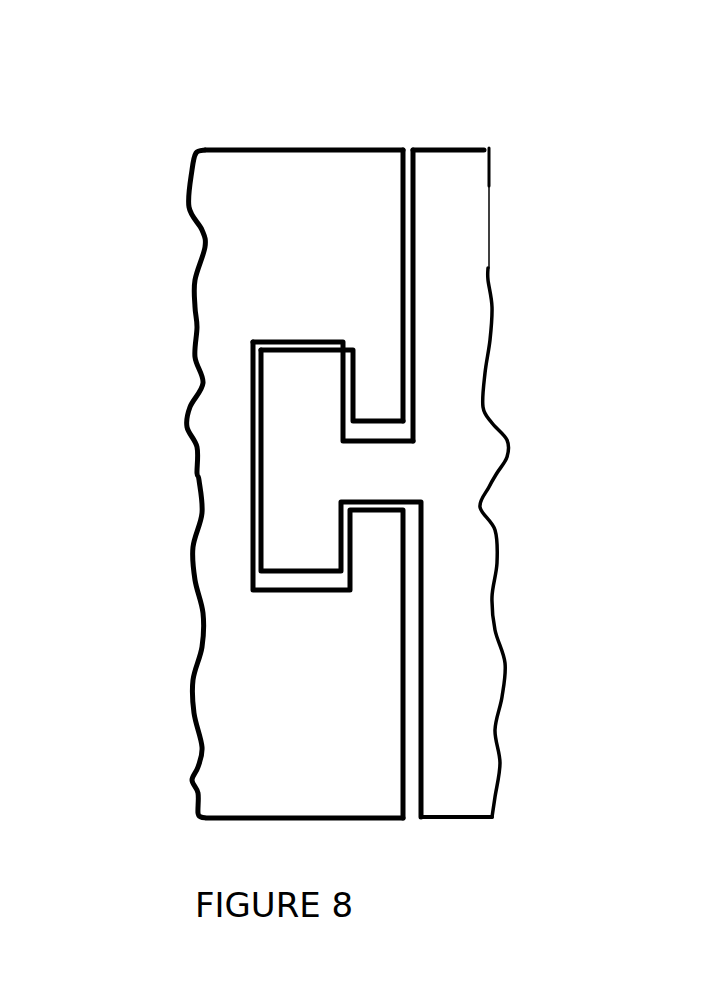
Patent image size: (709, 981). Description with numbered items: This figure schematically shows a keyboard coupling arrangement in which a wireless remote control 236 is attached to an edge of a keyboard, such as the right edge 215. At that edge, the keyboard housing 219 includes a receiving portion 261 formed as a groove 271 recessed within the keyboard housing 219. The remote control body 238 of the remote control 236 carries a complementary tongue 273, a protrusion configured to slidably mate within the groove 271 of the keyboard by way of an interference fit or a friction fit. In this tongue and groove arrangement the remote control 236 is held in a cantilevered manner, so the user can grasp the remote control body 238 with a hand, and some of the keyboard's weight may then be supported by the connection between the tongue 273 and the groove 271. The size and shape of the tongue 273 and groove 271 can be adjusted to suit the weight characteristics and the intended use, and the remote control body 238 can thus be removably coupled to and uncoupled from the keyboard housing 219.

The keyboard housing 219 is at (240, 149).
The right edge 215 is at (405, 149).
The receiving portion 261 is at (253, 323).
The groove 271 is at (250, 340).
The tongue 273 is at (253, 481).
The wireless remote control 236 is at (487, 268).
The remote control body 238 is at (455, 483).